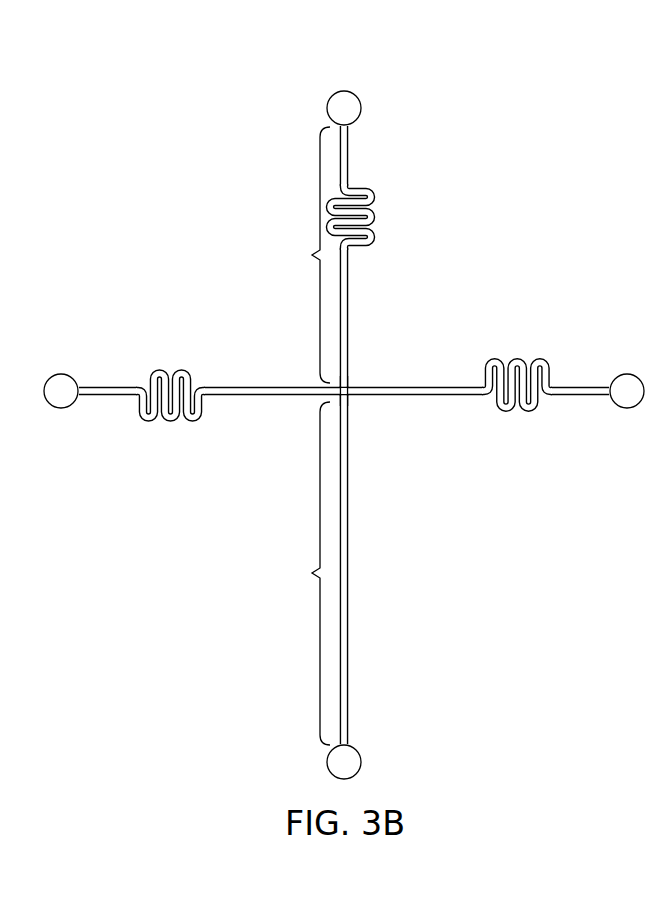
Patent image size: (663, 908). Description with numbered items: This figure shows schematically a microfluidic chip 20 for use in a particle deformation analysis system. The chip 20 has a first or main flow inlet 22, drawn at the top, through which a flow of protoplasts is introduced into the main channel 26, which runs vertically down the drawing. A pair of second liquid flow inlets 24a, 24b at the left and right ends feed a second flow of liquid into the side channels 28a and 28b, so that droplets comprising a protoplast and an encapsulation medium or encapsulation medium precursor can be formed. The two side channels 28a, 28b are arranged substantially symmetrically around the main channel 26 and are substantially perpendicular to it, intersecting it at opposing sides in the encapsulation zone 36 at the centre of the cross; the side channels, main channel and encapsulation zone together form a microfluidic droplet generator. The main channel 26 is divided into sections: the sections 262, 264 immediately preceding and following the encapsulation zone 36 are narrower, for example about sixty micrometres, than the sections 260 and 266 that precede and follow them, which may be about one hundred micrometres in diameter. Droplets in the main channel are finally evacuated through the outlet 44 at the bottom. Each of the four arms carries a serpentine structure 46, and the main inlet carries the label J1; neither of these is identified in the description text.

The microfluidic chip 20 is at (484, 131).
The junction J1 is at (281, 95).
The first or main flow inlet 22 is at (334, 94).
The second liquid flow inlet 24a is at (74, 380).
The second liquid flow inlet 24b is at (615, 379).
The main channel 26 is at (348, 590).
The side channel 28a is at (218, 387).
The side channel 28b is at (433, 387).
The encapsulation zone 36 is at (351, 386).
The outlet 44 is at (357, 750).
The serpentine mixing section 46 is at (387, 211).
The main channel section 260 is at (292, 255).
The main channel section 262 is at (350, 388).
The main channel section 264 is at (350, 398).
The main channel section 266 is at (293, 573).